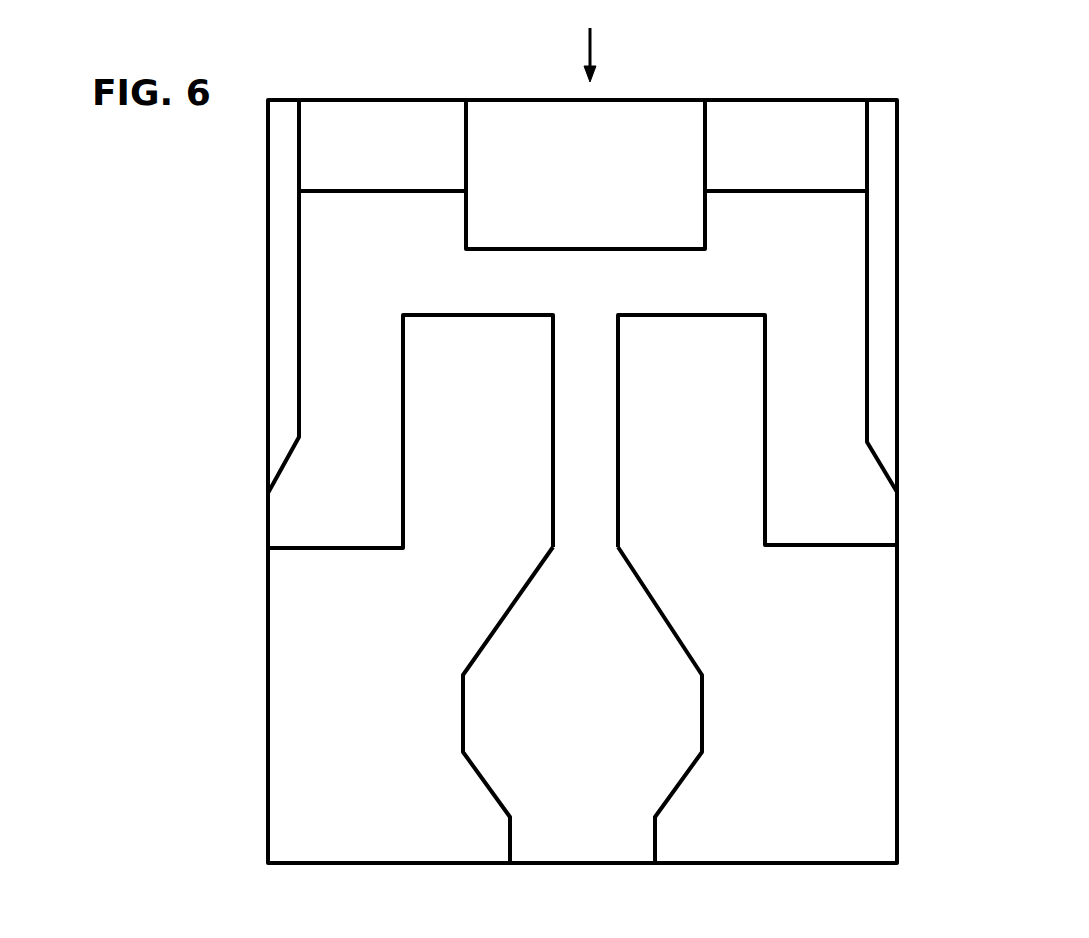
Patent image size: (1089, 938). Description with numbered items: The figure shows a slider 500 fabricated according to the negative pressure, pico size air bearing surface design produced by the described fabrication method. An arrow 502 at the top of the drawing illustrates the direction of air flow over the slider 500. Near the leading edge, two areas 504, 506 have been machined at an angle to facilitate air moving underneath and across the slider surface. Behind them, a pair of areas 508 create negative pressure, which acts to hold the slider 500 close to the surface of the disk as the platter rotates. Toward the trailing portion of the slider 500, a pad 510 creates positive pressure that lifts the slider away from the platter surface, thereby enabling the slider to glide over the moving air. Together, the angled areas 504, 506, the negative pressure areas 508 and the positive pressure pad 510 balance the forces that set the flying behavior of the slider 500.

The slider 500 is at (935, 519).
The arrow 502 is at (596, 48).
The area 504 is at (405, 113).
The area 506 is at (797, 112).
The areas 508 is at (277, 528).
The pad 510 is at (683, 640).